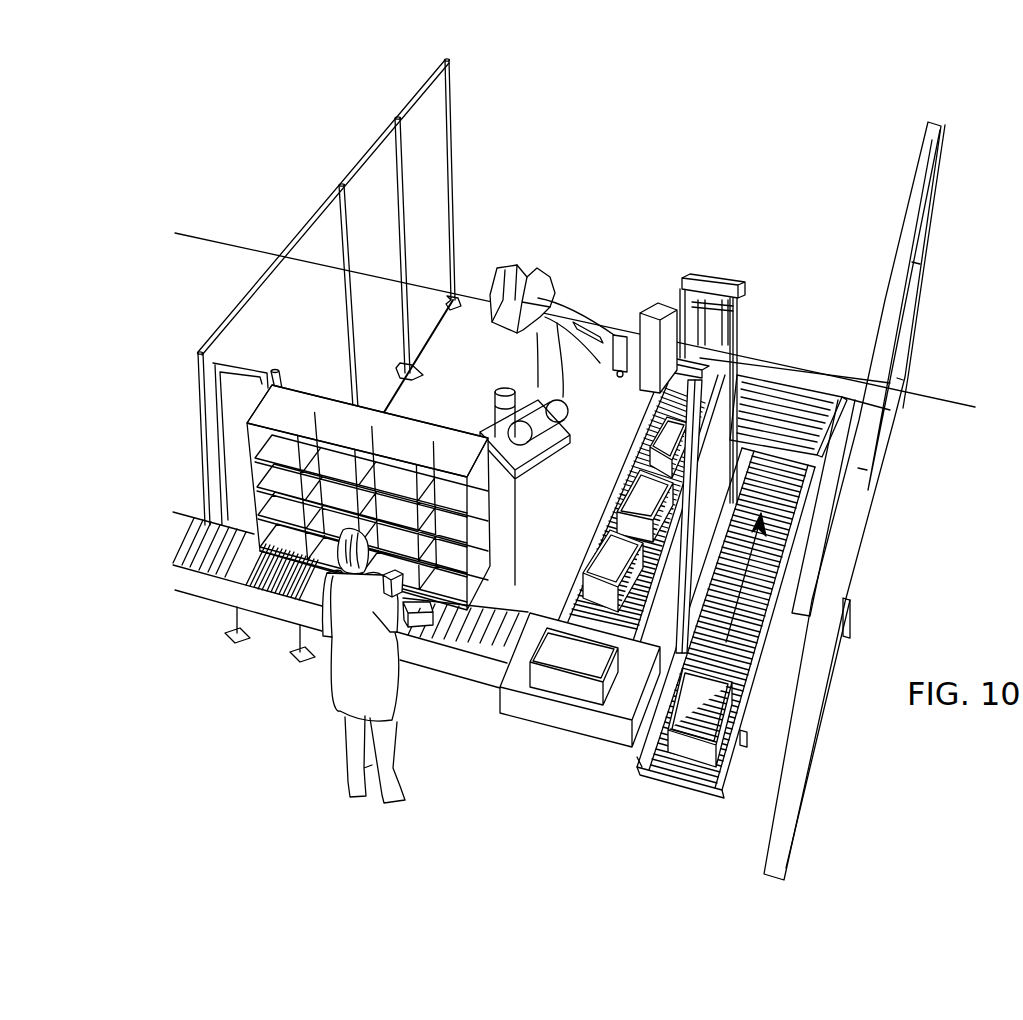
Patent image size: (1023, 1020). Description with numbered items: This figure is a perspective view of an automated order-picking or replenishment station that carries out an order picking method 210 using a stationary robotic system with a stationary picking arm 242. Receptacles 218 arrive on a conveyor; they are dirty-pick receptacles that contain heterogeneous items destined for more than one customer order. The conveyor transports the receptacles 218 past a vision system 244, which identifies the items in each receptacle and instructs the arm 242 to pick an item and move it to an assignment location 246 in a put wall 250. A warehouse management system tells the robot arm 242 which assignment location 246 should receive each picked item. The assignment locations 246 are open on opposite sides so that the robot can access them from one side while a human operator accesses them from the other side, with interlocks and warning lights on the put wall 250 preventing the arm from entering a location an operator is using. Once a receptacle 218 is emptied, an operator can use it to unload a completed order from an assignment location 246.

The order picking method 210 is at (559, 469).
The receptacle 218 is at (616, 716).
The stationary picking arm 242 is at (545, 272).
The vision system 244 is at (740, 317).
The assignment location 246 is at (440, 493).
The put wall 250 is at (316, 497).